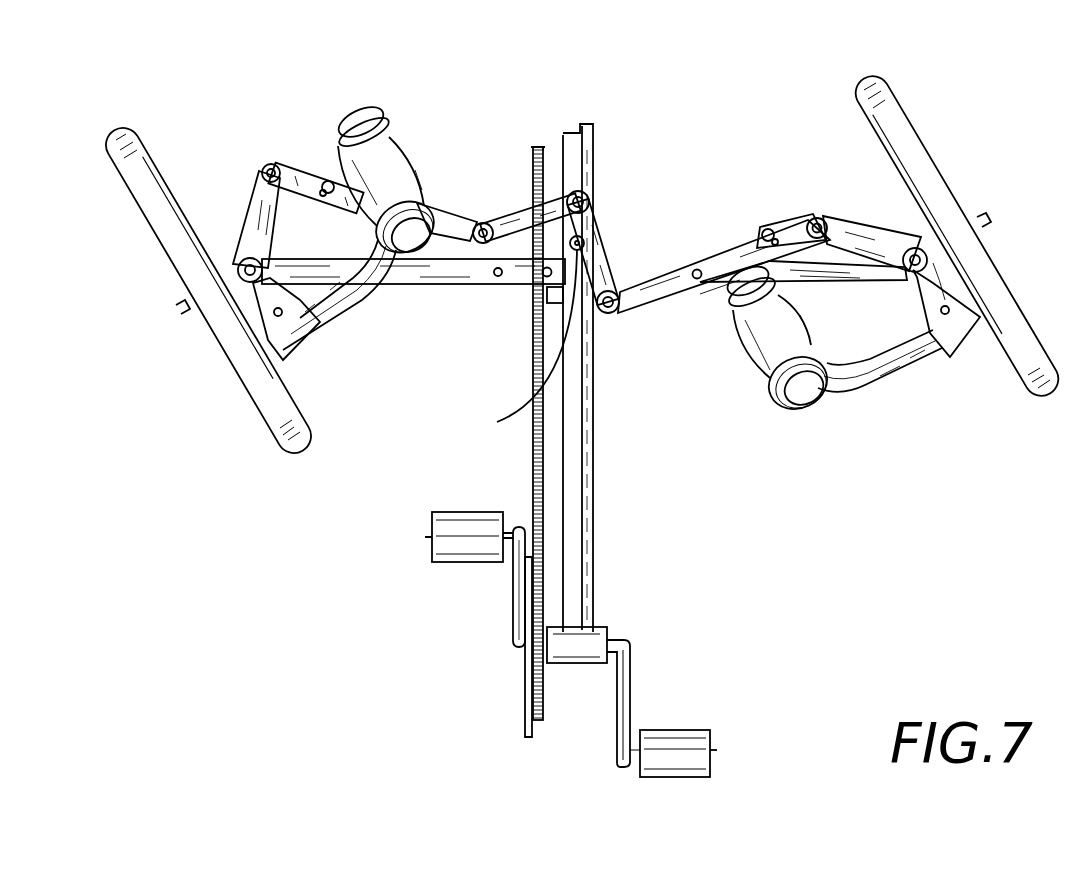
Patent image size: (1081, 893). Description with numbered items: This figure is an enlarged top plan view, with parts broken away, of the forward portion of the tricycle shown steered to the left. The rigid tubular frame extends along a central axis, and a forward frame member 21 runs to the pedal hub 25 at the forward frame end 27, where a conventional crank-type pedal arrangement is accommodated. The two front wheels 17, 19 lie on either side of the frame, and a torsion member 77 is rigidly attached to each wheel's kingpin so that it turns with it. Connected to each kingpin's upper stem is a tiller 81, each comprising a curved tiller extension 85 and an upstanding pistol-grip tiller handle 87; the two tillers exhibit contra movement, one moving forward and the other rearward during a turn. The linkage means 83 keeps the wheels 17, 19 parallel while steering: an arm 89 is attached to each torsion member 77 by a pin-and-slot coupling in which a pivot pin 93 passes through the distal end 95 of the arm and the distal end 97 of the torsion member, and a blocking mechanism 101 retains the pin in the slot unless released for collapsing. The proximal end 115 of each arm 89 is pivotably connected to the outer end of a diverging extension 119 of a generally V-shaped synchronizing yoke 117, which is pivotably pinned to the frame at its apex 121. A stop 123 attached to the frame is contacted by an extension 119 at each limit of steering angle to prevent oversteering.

The front wheel 17 is at (268, 426).
The front wheel 19 is at (910, 123).
The forward frame member 21 is at (593, 520).
The pedal hub 25 is at (580, 663).
The forward frame end 27 is at (593, 617).
The torsion member 77 is at (252, 204).
The tiller 81 is at (618, 280).
The linkage means 83 is at (584, 235).
The tiller extension 85 is at (365, 311).
The tiller handle 87 is at (397, 130).
The arm 89 is at (445, 228).
The pivot pin 93 is at (270, 166).
The distal end of the arm 95 is at (288, 163).
The distal end of the torsion member 97 is at (260, 177).
The blocking mechanism 101 is at (712, 213).
The proximal end of the arm 115 is at (465, 210).
The synchronizing yoke 117 is at (616, 188).
The yoke extension 119 is at (607, 240).
The apex 121 is at (577, 143).
The stop 123 is at (508, 343).